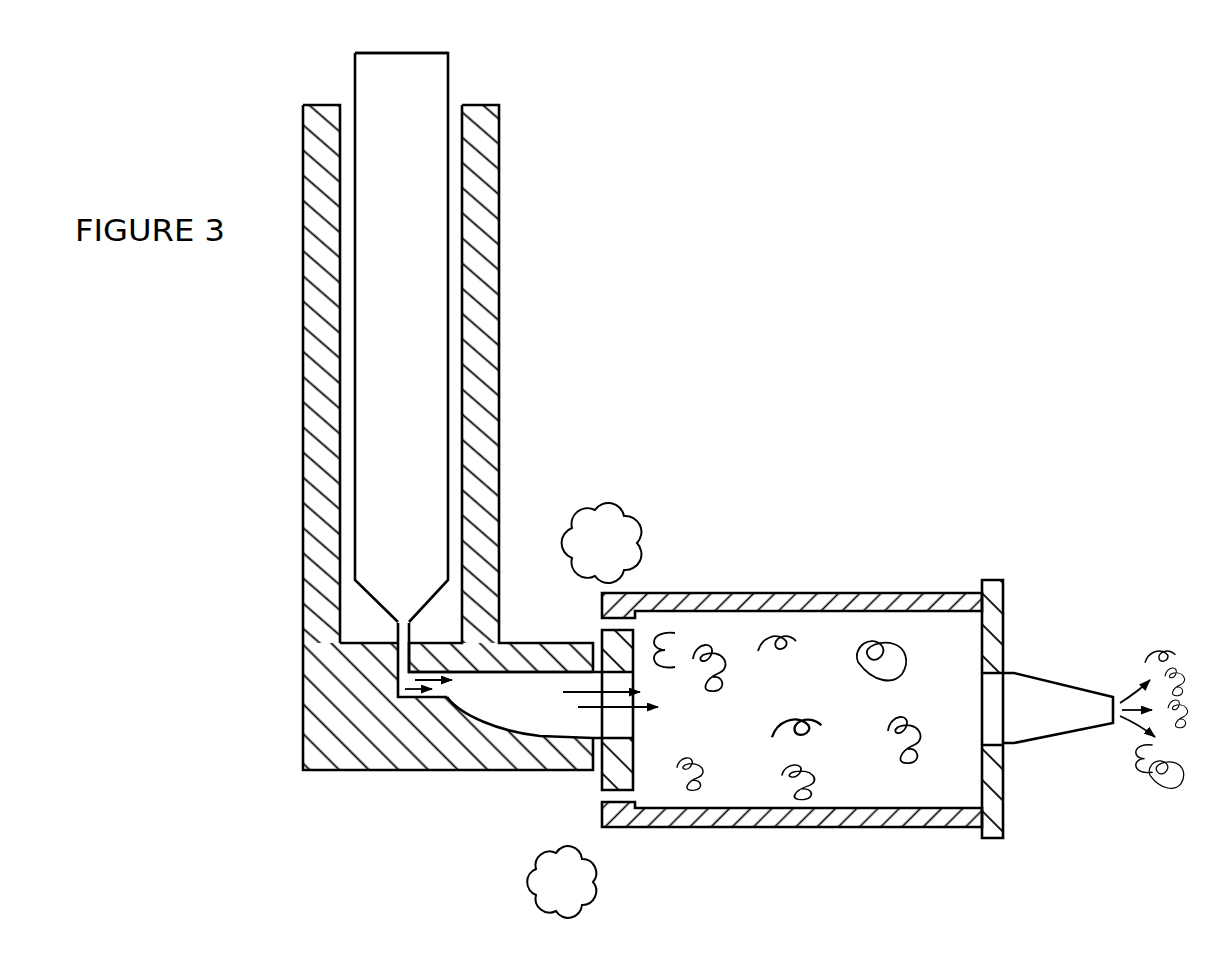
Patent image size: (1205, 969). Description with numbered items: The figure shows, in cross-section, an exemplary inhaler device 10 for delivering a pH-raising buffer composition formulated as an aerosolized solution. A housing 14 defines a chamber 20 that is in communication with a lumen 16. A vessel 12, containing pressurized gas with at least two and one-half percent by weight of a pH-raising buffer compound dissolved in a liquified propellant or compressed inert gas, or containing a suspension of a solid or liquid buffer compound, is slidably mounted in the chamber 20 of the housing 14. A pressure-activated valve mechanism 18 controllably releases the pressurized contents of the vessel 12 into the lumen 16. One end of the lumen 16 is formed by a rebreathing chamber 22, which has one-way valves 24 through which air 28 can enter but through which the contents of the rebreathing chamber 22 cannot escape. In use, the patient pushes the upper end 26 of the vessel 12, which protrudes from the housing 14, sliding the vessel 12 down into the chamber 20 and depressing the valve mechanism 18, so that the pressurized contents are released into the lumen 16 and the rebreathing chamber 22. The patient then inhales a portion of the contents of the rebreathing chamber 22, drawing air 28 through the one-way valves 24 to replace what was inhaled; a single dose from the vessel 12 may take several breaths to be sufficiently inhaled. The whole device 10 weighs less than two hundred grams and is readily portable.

The inhaler device 10 is at (757, 296).
The vessel 12 is at (422, 195).
The housing 14 is at (387, 751).
The lumen 16 is at (533, 720).
The pressure-activated valve mechanism 18 is at (402, 658).
The chamber 20 is at (353, 630).
The rebreathing chamber 22 is at (810, 658).
The one-way valves 24 is at (630, 590).
The upper end 26 is at (420, 59).
The air 28 is at (590, 622).